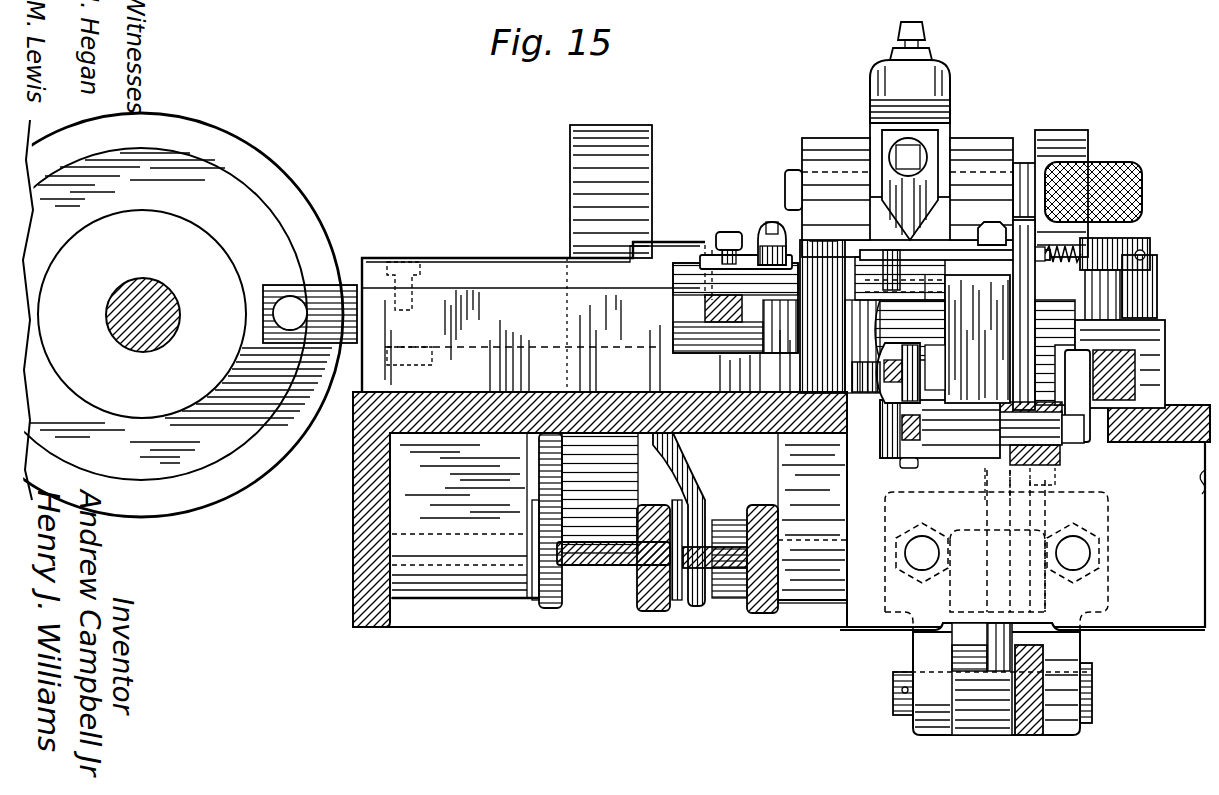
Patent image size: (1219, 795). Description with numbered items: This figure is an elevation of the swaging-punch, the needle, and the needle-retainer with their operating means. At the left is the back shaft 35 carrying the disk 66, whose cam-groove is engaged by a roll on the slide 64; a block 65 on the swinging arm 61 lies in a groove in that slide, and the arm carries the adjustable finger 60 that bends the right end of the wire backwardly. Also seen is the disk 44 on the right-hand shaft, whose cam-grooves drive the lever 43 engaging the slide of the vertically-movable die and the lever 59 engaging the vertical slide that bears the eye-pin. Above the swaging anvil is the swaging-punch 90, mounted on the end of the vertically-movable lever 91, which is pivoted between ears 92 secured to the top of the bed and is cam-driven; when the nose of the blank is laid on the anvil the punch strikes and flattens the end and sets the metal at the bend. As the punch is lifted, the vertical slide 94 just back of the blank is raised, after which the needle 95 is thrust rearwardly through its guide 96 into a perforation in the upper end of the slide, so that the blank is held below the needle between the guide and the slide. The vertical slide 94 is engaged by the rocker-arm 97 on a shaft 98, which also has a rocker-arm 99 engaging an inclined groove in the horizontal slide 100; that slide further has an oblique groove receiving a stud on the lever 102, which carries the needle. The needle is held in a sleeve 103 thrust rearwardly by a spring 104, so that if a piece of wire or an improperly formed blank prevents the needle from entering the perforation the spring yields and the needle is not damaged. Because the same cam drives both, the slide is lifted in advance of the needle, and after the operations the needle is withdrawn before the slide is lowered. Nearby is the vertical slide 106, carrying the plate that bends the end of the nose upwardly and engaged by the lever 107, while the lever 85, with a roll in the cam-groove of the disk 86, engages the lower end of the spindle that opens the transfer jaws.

The shaft 35 is at (147, 278).
The disk 66 is at (171, 315).
The slide 64 is at (356, 284).
The disk 44 is at (611, 191).
The swinging arm 61 is at (684, 262).
The block 65 is at (716, 232).
The finger 60 is at (760, 236).
The lever 59 is at (538, 460).
The lever 43 is at (708, 503).
The swaging-punch 90 is at (945, 150).
The vertically-movable lever 91 is at (872, 108).
The ears 92 is at (810, 138).
The disk 86 is at (1072, 140).
The needle 95 is at (1000, 233).
The vertical slide 94 is at (872, 270).
The spring 104 is at (1085, 250).
The sleeve 103 is at (1150, 250).
The lever 102 is at (1158, 293).
The rocker-arm 99 is at (1074, 345).
The slide 100 is at (1160, 366).
The shaft 98 is at (1097, 444).
The rocker-arm 97 is at (893, 452).
The guide 96 is at (942, 339).
The vertical slide 106 is at (920, 378).
The lever 107 is at (858, 376).
The lever 85 is at (1042, 648).